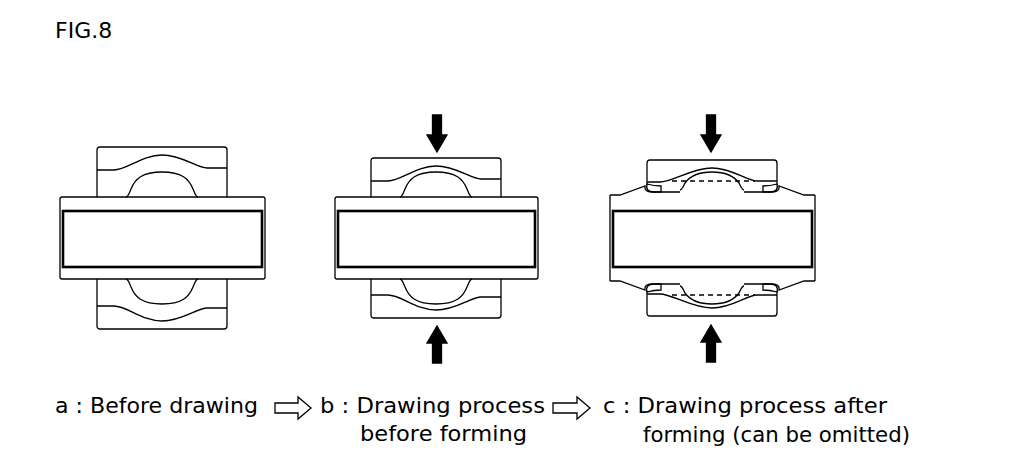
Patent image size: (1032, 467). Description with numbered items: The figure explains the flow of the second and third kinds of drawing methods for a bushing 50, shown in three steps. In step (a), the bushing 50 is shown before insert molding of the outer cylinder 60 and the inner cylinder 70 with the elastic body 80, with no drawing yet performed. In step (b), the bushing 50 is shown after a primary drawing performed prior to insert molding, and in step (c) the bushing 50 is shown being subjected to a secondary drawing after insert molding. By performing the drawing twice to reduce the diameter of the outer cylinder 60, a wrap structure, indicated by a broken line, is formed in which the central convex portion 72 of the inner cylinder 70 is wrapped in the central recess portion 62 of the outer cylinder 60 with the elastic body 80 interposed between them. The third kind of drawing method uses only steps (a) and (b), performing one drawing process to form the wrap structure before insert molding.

The bushing 50 is at (92, 162).
The outer cylinder 60 is at (198, 158).
The central recess portion 62 is at (198, 310).
The inner cylinder 70 is at (358, 203).
The central convex portion 72 is at (435, 292).
The elastic body 80 is at (650, 188).